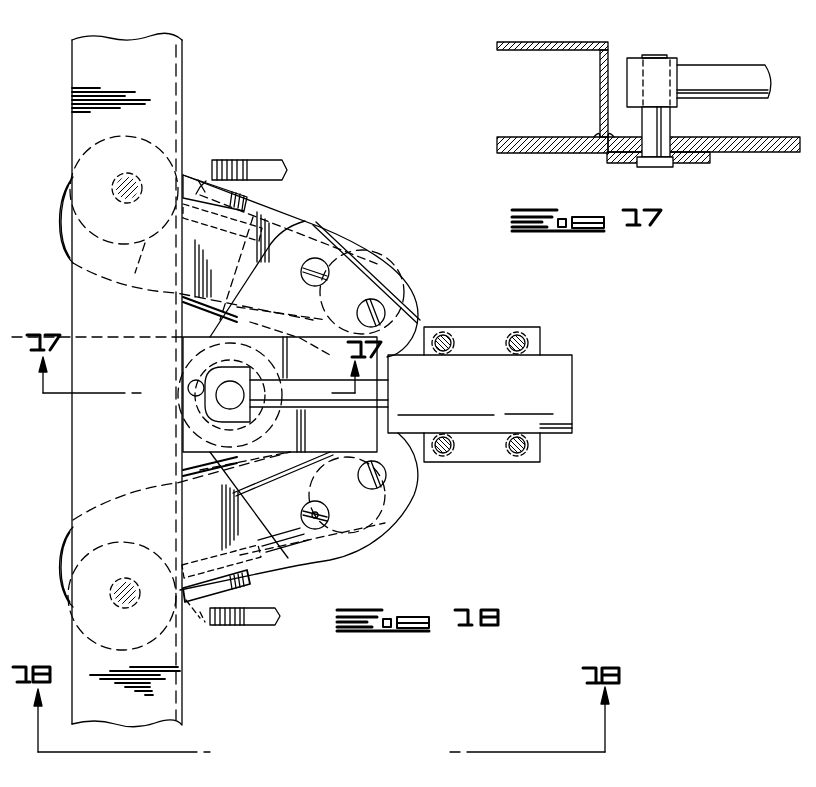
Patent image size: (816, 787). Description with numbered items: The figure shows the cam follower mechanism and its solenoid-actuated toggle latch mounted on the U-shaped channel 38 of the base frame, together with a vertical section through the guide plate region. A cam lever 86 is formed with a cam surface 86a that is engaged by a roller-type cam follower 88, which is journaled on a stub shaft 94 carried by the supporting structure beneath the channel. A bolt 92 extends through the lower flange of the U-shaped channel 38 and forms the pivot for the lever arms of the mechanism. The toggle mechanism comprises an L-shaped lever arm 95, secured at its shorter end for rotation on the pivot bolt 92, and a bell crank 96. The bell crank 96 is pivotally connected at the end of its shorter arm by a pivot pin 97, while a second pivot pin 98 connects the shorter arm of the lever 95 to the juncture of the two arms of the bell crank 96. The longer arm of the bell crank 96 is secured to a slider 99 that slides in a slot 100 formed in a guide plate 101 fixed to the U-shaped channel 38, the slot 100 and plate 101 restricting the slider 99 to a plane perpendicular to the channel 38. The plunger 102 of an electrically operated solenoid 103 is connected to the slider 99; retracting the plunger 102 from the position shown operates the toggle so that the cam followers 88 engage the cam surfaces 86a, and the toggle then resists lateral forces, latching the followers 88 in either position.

In FIG. 16, the U-shaped channel 38 is at (170, 73).
In FIG. 17, the U-shaped channel 38 is at (522, 42).
In FIG. 16, the cam lever 86 is at (283, 162).
In FIG. 16, the cam surface 86a is at (246, 160).
In FIG. 16, the cam follower 88 is at (250, 200).
In FIG. 16, the bolt 92 is at (220, 393).
In FIG. 16, the stub shaft 94 is at (190, 620).
In FIG. 16, the L-shaped lever arm 95 is at (287, 570).
In FIG. 16, the bell crank 96 is at (382, 549).
In FIG. 17, the bell crank 96 is at (718, 137).
In FIG. 16, the pivot pin 97 is at (417, 488).
In FIG. 16, the second pivot pin 98 is at (303, 512).
In FIG. 16, the slider 99 is at (205, 397).
In FIG. 17, the slider 99 is at (672, 134).
In FIG. 16, the slot 100 is at (190, 378).
In FIG. 16, the guide plate 101 is at (184, 453).
In FIG. 17, the guide plate 101 is at (556, 137).
In FIG. 16, the plunger 102 is at (390, 420).
In FIG. 17, the plunger 102 is at (737, 70).
In FIG. 16, the solenoid 103 is at (558, 428).